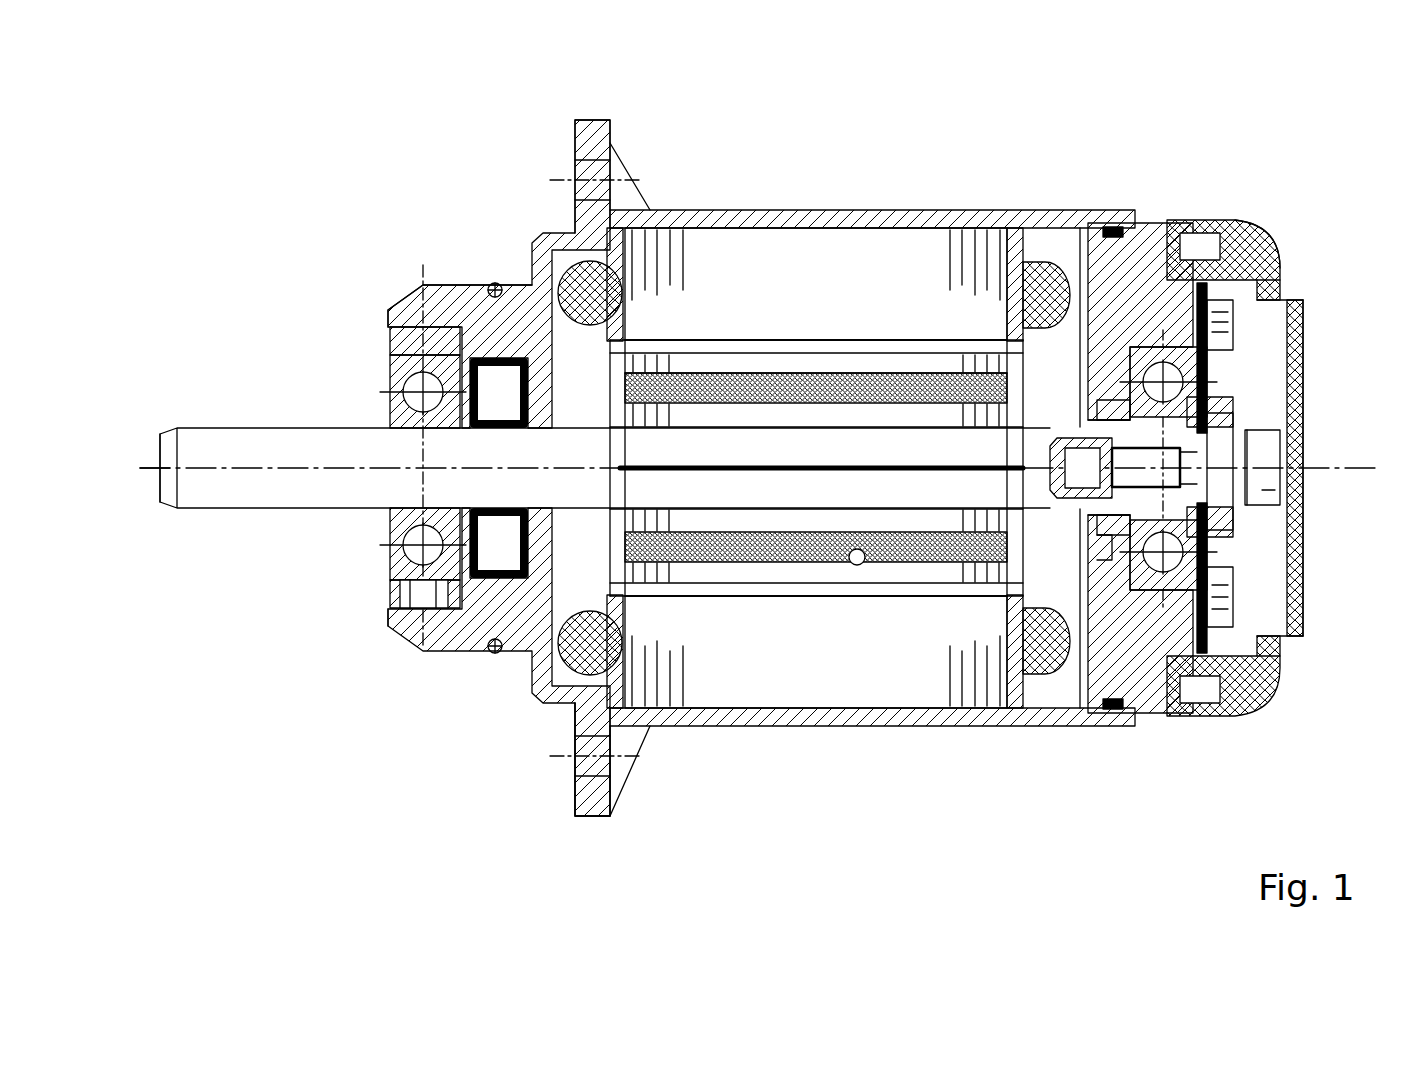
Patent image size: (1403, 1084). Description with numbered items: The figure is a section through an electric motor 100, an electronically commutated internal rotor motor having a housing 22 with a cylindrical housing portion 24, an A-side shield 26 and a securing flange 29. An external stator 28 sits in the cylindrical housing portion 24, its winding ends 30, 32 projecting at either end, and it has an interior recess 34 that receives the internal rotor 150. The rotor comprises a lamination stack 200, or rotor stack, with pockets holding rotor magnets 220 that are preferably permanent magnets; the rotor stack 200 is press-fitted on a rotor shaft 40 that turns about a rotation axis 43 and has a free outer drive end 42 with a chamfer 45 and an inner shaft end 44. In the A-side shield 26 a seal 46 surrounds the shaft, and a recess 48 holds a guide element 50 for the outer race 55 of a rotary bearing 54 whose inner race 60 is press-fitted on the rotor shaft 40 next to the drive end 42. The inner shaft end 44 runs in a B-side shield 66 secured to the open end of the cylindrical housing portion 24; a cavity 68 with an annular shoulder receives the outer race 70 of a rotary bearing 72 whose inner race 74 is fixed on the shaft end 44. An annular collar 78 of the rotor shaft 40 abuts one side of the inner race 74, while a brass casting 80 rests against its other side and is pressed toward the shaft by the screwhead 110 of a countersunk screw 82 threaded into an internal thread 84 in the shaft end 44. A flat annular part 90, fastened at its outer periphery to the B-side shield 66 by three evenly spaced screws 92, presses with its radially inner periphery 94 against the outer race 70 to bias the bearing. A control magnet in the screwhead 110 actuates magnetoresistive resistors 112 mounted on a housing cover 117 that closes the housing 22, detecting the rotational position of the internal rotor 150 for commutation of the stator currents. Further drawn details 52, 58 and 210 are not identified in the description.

The electric motor 100 is at (290, 237).
The housing 22 is at (525, 272).
The cylindrical housing portion 24 is at (752, 210).
The A-side shield 26 is at (530, 633).
The external stator 28 is at (830, 279).
The securing flange 29 is at (612, 810).
The winding end 30 is at (590, 326).
The winding end 32 is at (1050, 328).
The interior recess 34 is at (668, 357).
The rotor shaft 40 is at (750, 506).
The drive end 42 is at (252, 446).
The rotation axis 43 is at (150, 470).
The inner shaft end 44 is at (1107, 537).
The chamfer 45 is at (165, 426).
The seal 46 is at (447, 317).
The recess 48 is at (388, 338).
The guide element 50 is at (385, 355).
The front bearing 52 is at (387, 372).
The rotary bearing 54 is at (378, 553).
The outer race 55 is at (378, 567).
The bearing axis direction 58 is at (420, 705).
The inner race 60 is at (388, 520).
The B-side shield 66 is at (1243, 232).
The cavity 68 is at (1207, 367).
The outer race 70 is at (1137, 320).
The rotary bearing 72 is at (1115, 372).
The inner race 74 is at (1103, 388).
The annular collar 78 is at (1107, 557).
The casting 80 is at (1303, 370).
The countersunk screw 82 is at (1170, 481).
The internal thread 84 is at (1057, 438).
The annular part 90 is at (1265, 218).
The screws 92 is at (1278, 280).
The radially inner periphery 94 is at (1293, 602).
The screwhead 110 is at (1287, 540).
The magnetoresistive resistors 112 is at (1264, 490).
The housing cover 117 is at (1300, 433).
The internal rotor 150 is at (745, 570).
The lamination stack 200 is at (835, 418).
The hole 210 is at (860, 568).
The rotor magnets 220 is at (913, 372).